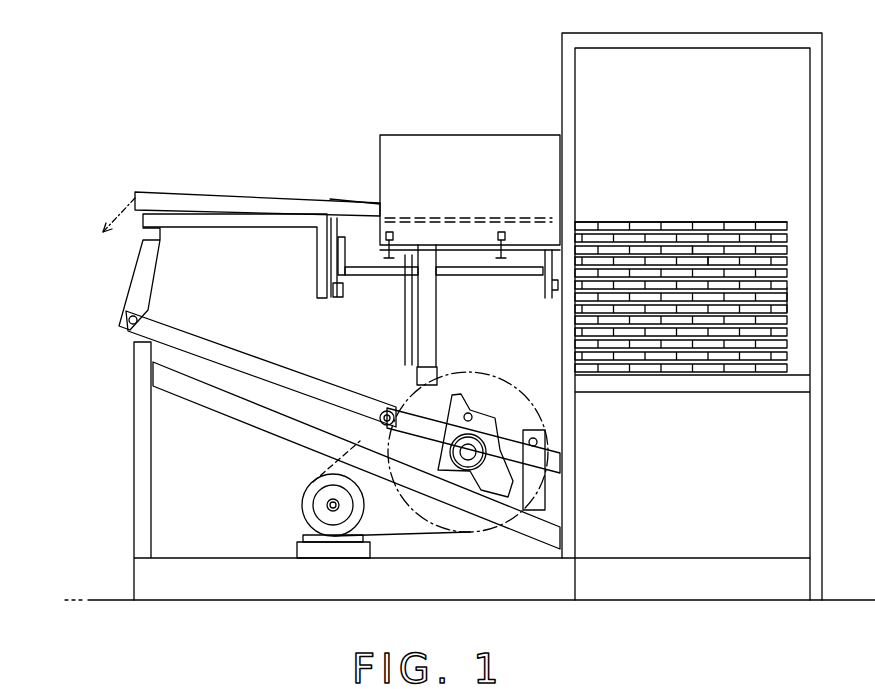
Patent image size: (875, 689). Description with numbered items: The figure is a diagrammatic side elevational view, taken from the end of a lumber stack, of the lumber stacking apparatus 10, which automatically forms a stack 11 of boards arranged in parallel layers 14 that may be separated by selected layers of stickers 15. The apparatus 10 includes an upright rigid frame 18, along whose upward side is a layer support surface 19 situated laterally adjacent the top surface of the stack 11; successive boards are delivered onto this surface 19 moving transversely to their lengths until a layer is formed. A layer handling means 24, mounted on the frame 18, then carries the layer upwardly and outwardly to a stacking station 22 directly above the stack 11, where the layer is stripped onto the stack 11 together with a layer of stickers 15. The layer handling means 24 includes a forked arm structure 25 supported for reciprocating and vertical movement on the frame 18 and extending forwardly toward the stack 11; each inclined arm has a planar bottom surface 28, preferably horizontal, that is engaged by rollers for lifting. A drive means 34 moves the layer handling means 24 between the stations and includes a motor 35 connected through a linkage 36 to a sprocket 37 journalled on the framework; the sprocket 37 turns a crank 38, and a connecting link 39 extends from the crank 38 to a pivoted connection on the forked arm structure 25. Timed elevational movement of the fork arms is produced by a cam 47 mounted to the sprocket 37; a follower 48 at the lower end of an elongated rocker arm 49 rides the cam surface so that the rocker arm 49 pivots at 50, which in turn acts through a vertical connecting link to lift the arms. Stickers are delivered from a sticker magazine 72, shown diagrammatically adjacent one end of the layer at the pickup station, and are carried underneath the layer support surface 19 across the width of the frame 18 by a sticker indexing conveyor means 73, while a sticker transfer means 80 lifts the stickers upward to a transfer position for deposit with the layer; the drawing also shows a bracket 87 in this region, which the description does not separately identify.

The lumber stacking apparatus 10 is at (275, 186).
The stack 11 is at (760, 222).
The layers 14 is at (718, 248).
The stickers 15 is at (788, 312).
The upright rigid frame 18 is at (134, 404).
The layer support surface 19 is at (350, 198).
The stacking station 22 is at (645, 216).
The layer handling means 24 is at (255, 227).
The forked arm structure 25 is at (203, 210).
The planar bottom surface 28 is at (289, 222).
The drive means 34 is at (359, 386).
The motor 35 is at (302, 504).
The linkage 36 is at (425, 528).
The sprocket 37 is at (407, 508).
The crank 38 is at (463, 418).
The connecting link 39 is at (293, 374).
The cam 47 is at (464, 406).
The follower 48 is at (483, 409).
The rocker arm 49 is at (504, 461).
The pivot 50 is at (538, 442).
The sticker magazine 72 is at (450, 136).
The sticker indexing conveyor means 73 is at (490, 237).
The sticker transfer means 80 is at (505, 276).
The bracket 87 is at (345, 255).